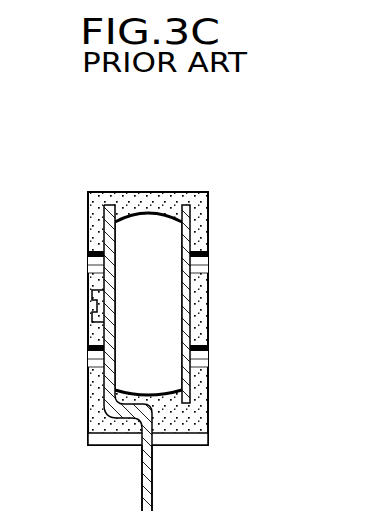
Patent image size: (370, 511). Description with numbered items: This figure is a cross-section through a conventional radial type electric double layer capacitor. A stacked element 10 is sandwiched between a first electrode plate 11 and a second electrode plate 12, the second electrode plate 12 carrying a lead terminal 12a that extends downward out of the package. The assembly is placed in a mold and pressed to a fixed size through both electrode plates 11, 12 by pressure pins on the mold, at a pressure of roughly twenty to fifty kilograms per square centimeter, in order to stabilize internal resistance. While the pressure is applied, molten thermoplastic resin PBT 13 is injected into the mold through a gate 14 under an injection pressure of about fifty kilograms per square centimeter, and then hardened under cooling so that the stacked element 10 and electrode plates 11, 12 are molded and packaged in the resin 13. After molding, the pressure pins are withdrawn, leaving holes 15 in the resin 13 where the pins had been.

The stacked element 10 is at (157, 235).
The first electrode plate 11 is at (192, 393).
The second electrode plate 12 is at (104, 420).
The lead terminal 12a is at (152, 485).
The thermoplastic resin PBT 13 is at (133, 205).
The gate 14 is at (88, 320).
The holes 15 is at (90, 262).